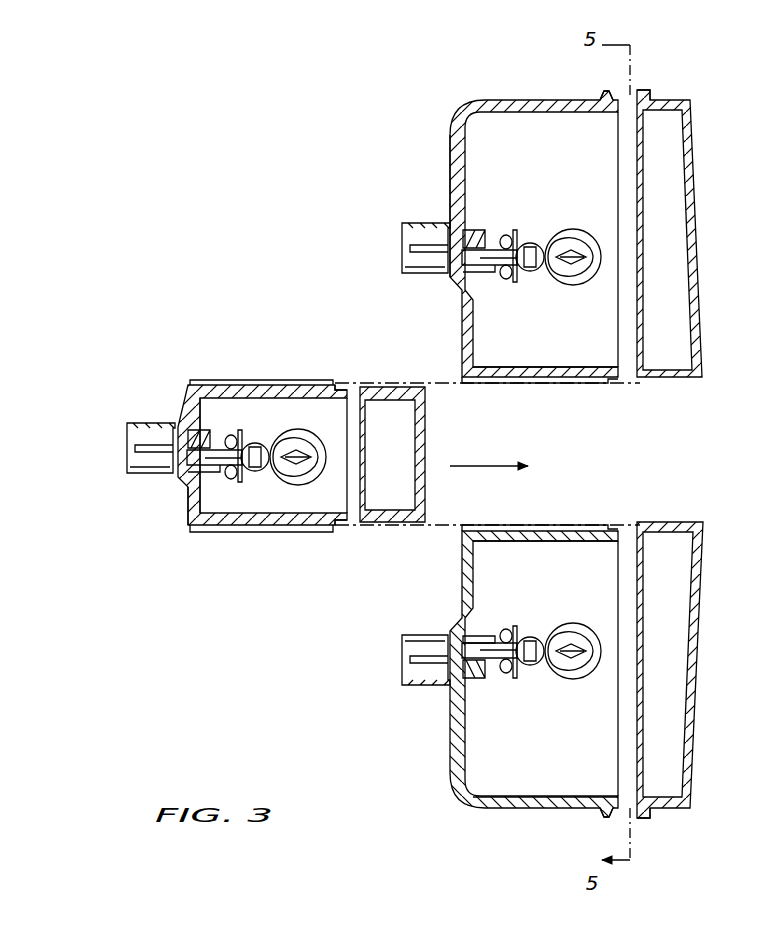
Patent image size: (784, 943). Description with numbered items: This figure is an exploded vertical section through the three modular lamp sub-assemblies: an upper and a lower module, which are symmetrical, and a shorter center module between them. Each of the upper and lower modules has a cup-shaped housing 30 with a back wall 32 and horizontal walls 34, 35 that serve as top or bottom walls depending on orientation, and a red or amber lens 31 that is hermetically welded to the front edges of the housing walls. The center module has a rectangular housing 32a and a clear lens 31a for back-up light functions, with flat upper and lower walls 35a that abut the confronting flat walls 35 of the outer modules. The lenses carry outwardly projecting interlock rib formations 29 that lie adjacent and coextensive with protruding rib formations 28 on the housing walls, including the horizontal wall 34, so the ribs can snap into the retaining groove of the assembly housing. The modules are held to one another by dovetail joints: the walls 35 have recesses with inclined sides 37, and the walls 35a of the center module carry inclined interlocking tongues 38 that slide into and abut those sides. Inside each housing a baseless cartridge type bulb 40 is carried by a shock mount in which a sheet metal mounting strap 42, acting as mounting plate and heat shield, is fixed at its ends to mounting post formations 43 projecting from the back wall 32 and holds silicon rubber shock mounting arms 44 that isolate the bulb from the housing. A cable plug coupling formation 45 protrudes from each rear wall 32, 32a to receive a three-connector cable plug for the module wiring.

The protruding rib formation 28 is at (600, 93).
The interlock rib formation 29 is at (648, 95).
The housing portion 30 is at (460, 102).
The lens 31 is at (704, 222).
The lens of center module 31a is at (430, 452).
The back wall 32 is at (450, 160).
The housing of middle module 32a is at (188, 498).
The horizontal wall 34 is at (552, 795).
The horizontal wall 35 is at (520, 370).
The upper and lower walls of center module 35a is at (322, 385).
The inclined sides 37 is at (572, 385).
The interlocking tongue 38 is at (232, 380).
The baseless cartridge type bulb 40 is at (580, 230).
The mounting strap 42 is at (513, 280).
The mounting post formation 43 is at (500, 688).
The shock mounting arm 44 is at (530, 243).
The cable plug coupling formation 45 is at (407, 222).